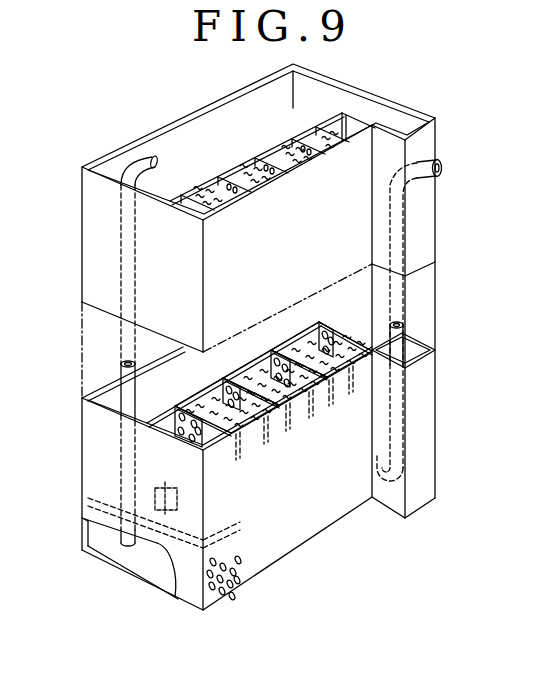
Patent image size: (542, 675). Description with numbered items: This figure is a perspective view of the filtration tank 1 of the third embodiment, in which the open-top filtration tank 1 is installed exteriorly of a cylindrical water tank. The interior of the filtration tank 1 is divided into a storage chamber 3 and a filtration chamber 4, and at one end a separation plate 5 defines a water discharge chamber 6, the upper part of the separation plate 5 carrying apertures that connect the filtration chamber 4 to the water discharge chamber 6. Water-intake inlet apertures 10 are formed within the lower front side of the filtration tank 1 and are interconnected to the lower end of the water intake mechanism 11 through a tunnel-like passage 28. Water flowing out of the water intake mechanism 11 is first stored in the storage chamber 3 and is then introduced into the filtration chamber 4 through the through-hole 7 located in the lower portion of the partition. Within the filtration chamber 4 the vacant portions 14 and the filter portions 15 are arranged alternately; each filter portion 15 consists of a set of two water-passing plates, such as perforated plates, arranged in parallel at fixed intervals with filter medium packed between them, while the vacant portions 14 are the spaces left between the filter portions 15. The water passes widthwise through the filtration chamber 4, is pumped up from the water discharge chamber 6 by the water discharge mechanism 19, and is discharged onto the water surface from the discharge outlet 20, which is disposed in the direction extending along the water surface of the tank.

The filtration tank 1 is at (298, 540).
The storage chamber 3 is at (172, 372).
The filtration chamber 4 is at (235, 383).
The separation plate 5 is at (315, 320).
The water discharge chamber 6 is at (433, 350).
The through-hole 7 is at (177, 500).
The water-intake inlet apertures 10 is at (228, 591).
The water intake mechanism 11 is at (118, 390).
The vacant portions 14 is at (268, 350).
The filter portions 15 is at (250, 363).
The water discharge mechanism 19 is at (438, 165).
The discharge outlet 20 is at (441, 175).
The tunnel-like passage 28 is at (152, 572).